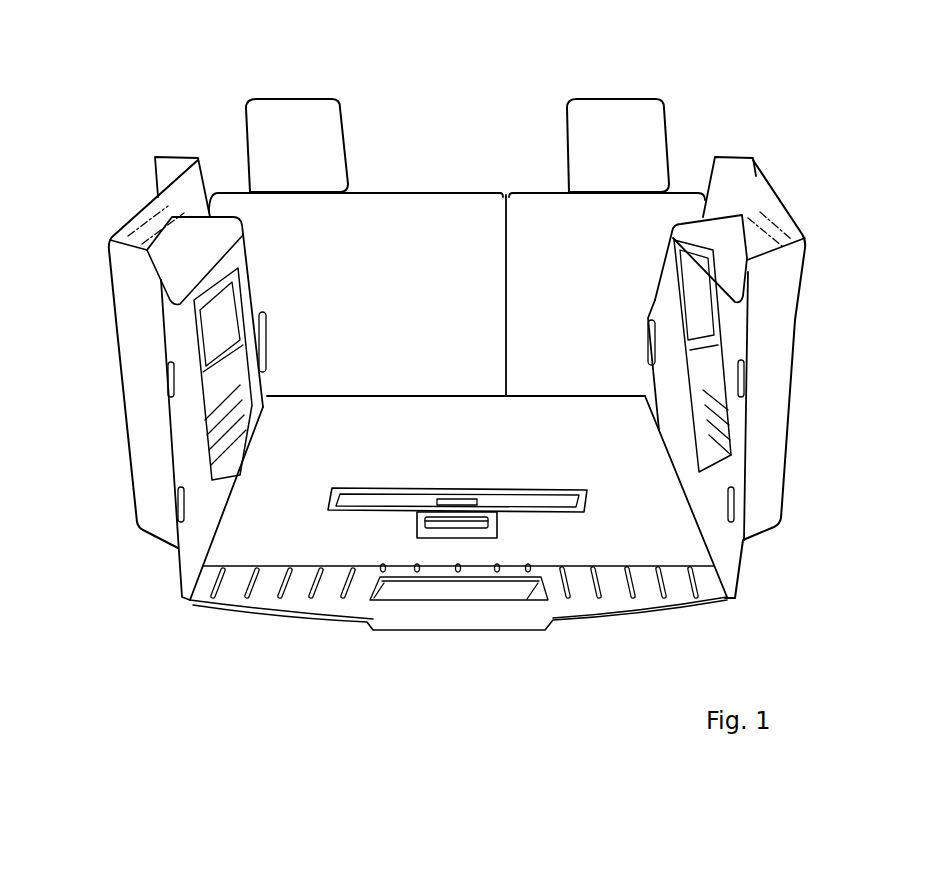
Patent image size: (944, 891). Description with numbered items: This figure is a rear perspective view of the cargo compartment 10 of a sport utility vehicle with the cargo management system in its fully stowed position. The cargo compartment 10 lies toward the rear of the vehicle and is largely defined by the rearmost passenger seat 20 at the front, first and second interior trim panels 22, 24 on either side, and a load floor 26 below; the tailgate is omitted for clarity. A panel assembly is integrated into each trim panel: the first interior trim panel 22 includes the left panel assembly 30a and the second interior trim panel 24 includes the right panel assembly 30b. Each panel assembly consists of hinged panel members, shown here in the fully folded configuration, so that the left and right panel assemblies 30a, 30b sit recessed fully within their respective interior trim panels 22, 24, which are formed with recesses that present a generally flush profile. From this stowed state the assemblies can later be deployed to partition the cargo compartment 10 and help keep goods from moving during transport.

The cargo compartment 10 is at (686, 164).
The passenger seat 20 is at (460, 200).
The first interior trim panel 22 is at (207, 511).
The second interior trim panel 24 is at (724, 457).
The load floor 26 is at (488, 472).
The left panel assembly 30a is at (233, 247).
The right panel assembly 30b is at (675, 250).